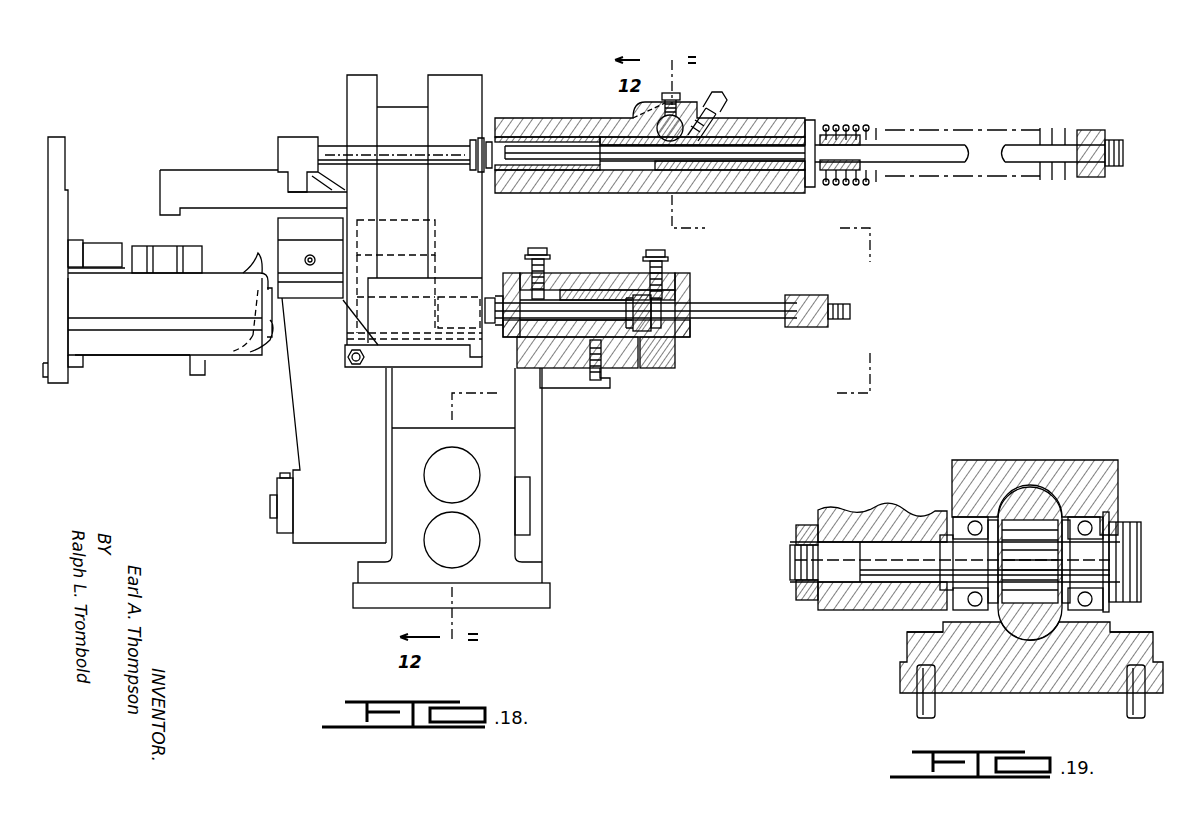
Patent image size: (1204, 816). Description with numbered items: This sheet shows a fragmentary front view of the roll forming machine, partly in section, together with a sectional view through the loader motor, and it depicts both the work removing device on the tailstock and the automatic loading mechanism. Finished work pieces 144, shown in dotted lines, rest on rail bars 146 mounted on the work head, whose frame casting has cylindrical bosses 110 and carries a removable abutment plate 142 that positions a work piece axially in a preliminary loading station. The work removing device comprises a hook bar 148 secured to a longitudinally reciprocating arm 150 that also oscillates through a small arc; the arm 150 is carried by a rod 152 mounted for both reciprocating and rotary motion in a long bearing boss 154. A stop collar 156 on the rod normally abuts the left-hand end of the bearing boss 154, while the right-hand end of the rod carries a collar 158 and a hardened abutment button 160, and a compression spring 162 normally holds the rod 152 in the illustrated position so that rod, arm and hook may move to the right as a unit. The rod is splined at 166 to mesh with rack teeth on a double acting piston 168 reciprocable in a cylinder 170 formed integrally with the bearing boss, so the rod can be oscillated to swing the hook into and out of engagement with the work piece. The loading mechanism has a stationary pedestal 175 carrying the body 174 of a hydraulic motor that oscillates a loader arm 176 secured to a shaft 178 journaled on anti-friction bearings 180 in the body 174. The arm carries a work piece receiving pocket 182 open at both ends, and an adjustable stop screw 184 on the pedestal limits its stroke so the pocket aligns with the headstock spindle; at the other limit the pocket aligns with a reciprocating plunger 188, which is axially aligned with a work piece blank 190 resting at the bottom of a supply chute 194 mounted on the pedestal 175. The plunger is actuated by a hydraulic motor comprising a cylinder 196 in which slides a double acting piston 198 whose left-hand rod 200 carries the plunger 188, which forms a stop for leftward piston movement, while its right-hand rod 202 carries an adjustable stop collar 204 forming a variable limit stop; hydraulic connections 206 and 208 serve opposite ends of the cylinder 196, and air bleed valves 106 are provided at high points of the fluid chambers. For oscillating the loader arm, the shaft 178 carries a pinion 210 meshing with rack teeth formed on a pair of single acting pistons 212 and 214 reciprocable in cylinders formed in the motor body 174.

In FIG. 18, the air bleed valve 106 is at (548, 258).
In FIG. 18, the cylindrical boss 110 is at (192, 372).
In FIG. 18, the removable abutment plate 142 is at (255, 350).
In FIG. 18, the work piece 144 is at (180, 250).
In FIG. 18, the rail bar 146 is at (215, 301).
In FIG. 18, the hook bar 148 is at (214, 182).
In FIG. 18, the arm 150 is at (297, 140).
In FIG. 18, the rod 152 is at (400, 148).
In FIG. 18, the bearing boss 154 is at (738, 124).
In FIG. 18, the stop collar 156 is at (480, 138).
In FIG. 18, the collar 158 is at (1100, 130).
In FIG. 18, the abutment button 160 is at (1123, 151).
In FIG. 18, the compression spring 162 is at (870, 127).
In FIG. 18, the spline 166 is at (716, 165).
In FIG. 18, the double acting piston 168 is at (690, 112).
In FIG. 18, the cylinder 170 is at (636, 106).
In FIG. 18, the motor body 174 is at (505, 548).
In FIG. 19, the motor body 174 is at (1110, 636).
In FIG. 18, the pedestal 175 is at (548, 440).
In FIG. 19, the pedestal 175 is at (1062, 690).
In FIG. 18, the loader arm 176 is at (300, 427).
In FIG. 19, the loader arm 176 is at (890, 505).
In FIG. 18, the shaft 178 is at (276, 511).
In FIG. 19, the shaft 178 is at (865, 590).
In FIG. 19, the anti-friction bearings 180 is at (1109, 518).
In FIG. 18, the work piece receiving pocket 182 is at (330, 262).
In FIG. 18, the adjustable stop screw 184 is at (354, 370).
In FIG. 18, the plunger 188 is at (502, 290).
In FIG. 18, the work piece blank 190 is at (447, 290).
In FIG. 18, the supply chute 194 is at (383, 115).
In FIG. 18, the cylinder 196 is at (575, 300).
In FIG. 18, the double acting piston 198 is at (640, 352).
In FIG. 18, the rod 200 is at (620, 368).
In FIG. 18, the rod 202 is at (750, 319).
In FIG. 18, the adjustable stop collar 204 is at (810, 296).
In FIG. 18, the hydraulic connection 206 is at (680, 352).
In FIG. 18, the hydraulic connection 208 is at (527, 367).
In FIG. 19, the pinion 210 is at (1043, 528).
In FIG. 19, the single acting piston 212 is at (1030, 503).
In FIG. 19, the single acting piston 214 is at (1035, 625).